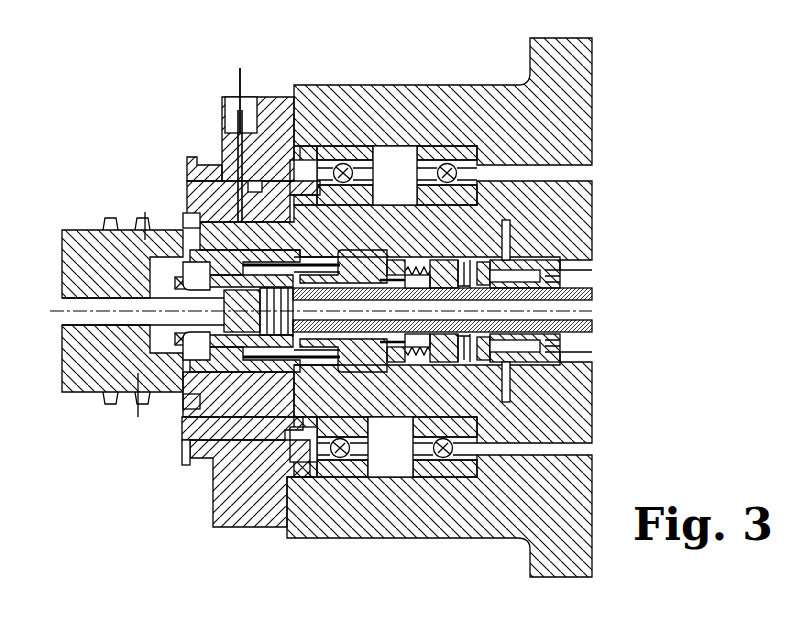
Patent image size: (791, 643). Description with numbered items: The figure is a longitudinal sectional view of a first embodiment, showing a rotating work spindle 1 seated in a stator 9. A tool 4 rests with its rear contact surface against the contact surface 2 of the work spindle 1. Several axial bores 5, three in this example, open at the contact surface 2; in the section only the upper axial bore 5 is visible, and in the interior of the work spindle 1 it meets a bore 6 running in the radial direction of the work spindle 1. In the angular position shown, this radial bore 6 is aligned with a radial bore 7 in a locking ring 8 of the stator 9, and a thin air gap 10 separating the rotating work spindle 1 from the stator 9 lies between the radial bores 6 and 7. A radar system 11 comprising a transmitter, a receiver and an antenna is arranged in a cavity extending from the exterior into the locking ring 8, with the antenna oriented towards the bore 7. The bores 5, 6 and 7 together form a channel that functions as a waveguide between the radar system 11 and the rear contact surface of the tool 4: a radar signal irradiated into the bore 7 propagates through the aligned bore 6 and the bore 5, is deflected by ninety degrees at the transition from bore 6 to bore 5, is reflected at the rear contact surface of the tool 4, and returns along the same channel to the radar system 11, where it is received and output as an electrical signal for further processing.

The work spindle 1 is at (183, 417).
The contact surface 2 is at (168, 403).
The tool 4 is at (63, 397).
The axial bore 5 is at (183, 215).
The radial bore 6 is at (227, 207).
The radial bore 7 is at (240, 180).
The locking ring 8 is at (270, 108).
The stator 9 is at (365, 112).
The air gap 10 is at (205, 180).
The radar system 11 is at (233, 110).